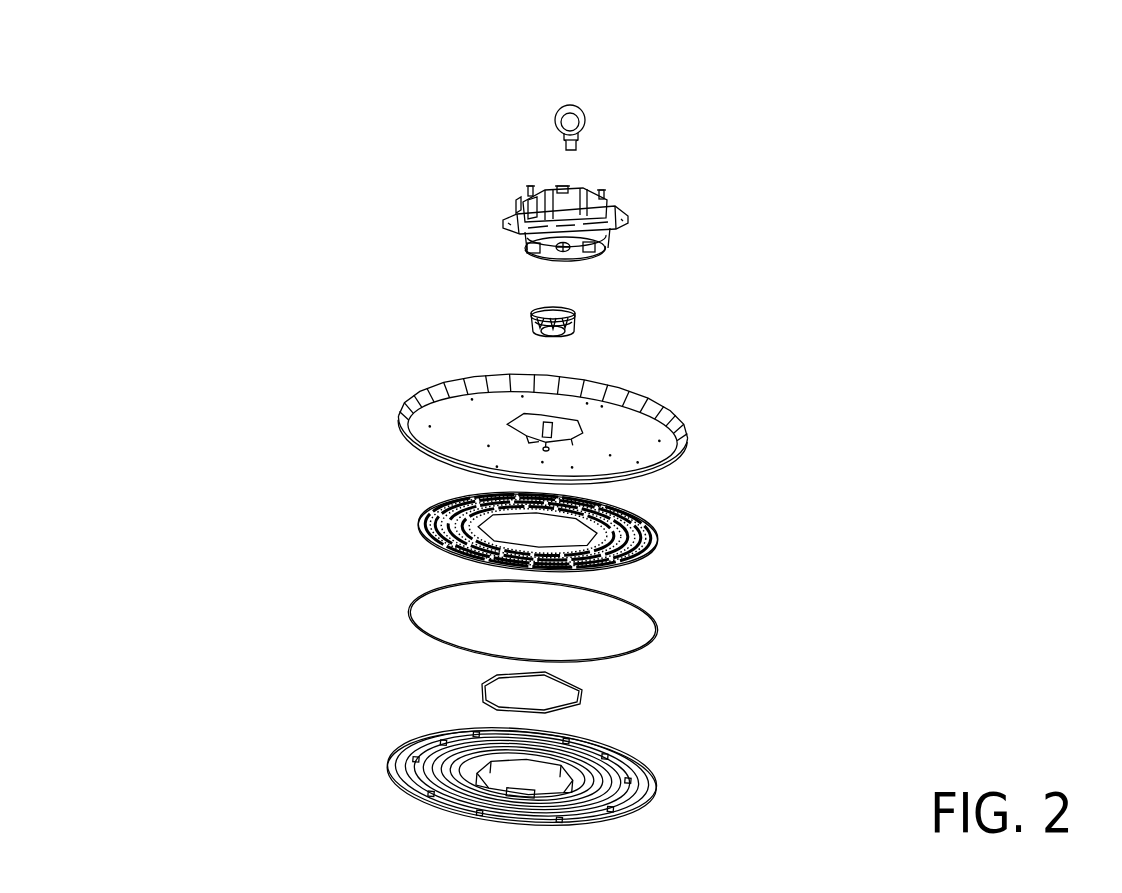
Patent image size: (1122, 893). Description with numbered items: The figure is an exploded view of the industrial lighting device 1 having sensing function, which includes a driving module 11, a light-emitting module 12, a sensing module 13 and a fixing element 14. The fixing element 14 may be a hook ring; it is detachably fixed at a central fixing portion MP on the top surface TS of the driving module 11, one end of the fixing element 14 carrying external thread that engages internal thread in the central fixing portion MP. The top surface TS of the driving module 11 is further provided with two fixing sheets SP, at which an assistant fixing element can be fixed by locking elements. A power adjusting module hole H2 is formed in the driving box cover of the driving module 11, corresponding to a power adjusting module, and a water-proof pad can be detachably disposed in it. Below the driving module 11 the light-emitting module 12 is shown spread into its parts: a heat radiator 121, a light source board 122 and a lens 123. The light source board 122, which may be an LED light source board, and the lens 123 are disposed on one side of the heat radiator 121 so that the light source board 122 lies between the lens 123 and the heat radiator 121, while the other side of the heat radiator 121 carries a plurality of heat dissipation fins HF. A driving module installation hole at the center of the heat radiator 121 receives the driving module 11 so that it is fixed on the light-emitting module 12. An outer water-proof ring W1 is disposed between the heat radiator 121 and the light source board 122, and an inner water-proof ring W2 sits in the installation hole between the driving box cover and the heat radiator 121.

The industrial lighting device 1 is at (202, 178).
The driving module 11 is at (608, 218).
The light-emitting module 12 is at (907, 482).
The heat radiator 121 is at (687, 443).
The light source board 122 is at (660, 543).
The lens 123 is at (657, 782).
The sensing module 13 is at (577, 328).
The fixing element 14 is at (585, 115).
The fixing sheets SP is at (524, 200).
The central fixing portion MP is at (562, 188).
The top surface TS is at (522, 202).
The heat dissipation fins HF is at (533, 377).
The power adjusting module hole H2 is at (490, 424).
The outer water-proof ring W1 is at (407, 613).
The inner water-proof ring W2 is at (482, 686).